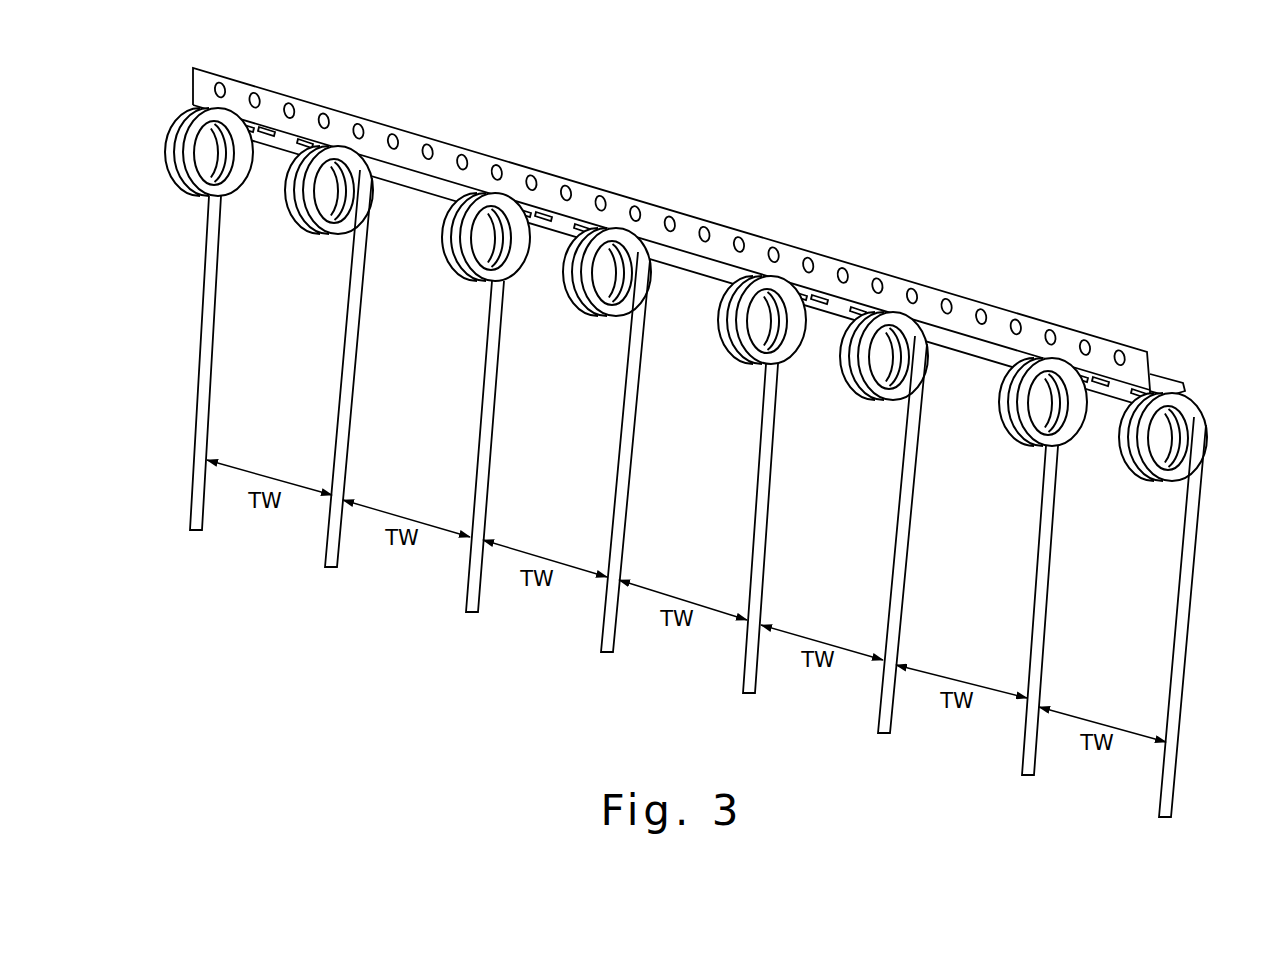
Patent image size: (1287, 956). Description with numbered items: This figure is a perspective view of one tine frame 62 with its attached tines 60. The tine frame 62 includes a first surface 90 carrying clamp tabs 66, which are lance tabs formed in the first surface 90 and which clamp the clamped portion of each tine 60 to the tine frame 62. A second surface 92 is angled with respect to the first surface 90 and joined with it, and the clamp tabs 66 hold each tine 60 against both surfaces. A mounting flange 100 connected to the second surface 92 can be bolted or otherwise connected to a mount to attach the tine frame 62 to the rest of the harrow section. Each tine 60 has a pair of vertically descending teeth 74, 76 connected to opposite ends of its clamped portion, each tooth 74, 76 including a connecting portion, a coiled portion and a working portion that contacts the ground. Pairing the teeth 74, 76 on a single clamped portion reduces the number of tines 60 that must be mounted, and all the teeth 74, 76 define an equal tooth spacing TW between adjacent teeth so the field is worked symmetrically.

The tine 60 is at (277, 165).
The tine frame 62 is at (1170, 375).
The clamp tab 66 is at (305, 142).
The tooth 74 is at (228, 203).
The tooth 76 is at (350, 237).
The first surface 90 is at (992, 357).
The second surface 92 is at (1155, 373).
The mounting flange 100 is at (1040, 322).